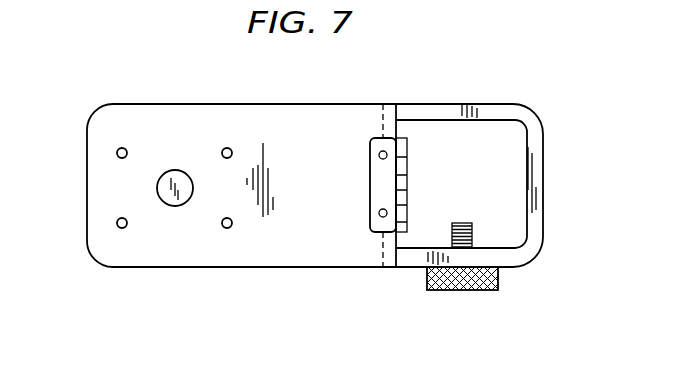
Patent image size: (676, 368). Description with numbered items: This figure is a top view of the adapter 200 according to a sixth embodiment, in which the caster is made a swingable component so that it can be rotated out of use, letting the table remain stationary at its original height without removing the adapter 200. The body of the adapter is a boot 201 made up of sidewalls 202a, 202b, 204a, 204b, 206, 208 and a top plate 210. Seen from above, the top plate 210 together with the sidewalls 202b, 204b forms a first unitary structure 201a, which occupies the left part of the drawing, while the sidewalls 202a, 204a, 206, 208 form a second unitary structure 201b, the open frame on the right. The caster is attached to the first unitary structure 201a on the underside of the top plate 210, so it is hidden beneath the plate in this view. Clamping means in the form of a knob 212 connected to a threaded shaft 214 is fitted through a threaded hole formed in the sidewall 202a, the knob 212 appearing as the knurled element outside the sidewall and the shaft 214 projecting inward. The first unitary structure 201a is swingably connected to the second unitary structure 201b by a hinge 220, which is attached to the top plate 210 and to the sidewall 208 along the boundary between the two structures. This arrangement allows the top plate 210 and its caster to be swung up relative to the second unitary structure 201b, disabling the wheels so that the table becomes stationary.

The adapter 200 is at (94, 273).
The boot 201 is at (97, 110).
The first unitary structure 201a is at (173, 102).
The second unitary structure 201b is at (538, 105).
The sidewall 202a is at (405, 268).
The sidewall 202b is at (238, 270).
The sidewall 204a is at (412, 103).
The sidewall 204b is at (325, 103).
The sidewall 206 is at (543, 192).
The sidewall 208 is at (382, 117).
The top plate 210 is at (166, 260).
The knob 212 is at (484, 291).
The threaded shaft 214 is at (472, 232).
The hinge 220 is at (370, 200).